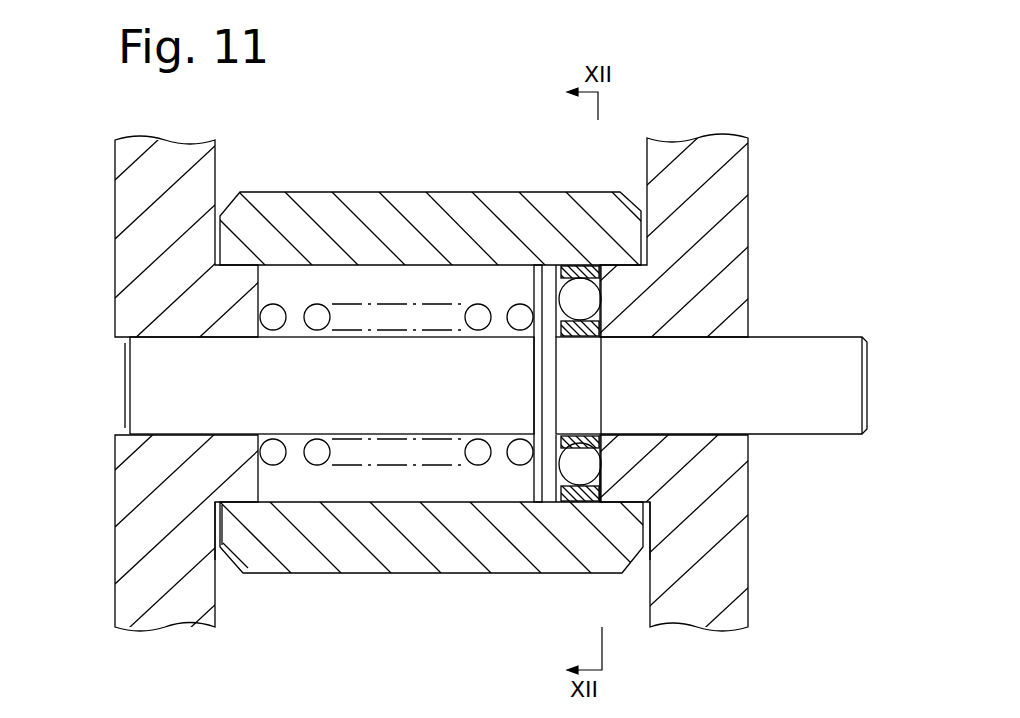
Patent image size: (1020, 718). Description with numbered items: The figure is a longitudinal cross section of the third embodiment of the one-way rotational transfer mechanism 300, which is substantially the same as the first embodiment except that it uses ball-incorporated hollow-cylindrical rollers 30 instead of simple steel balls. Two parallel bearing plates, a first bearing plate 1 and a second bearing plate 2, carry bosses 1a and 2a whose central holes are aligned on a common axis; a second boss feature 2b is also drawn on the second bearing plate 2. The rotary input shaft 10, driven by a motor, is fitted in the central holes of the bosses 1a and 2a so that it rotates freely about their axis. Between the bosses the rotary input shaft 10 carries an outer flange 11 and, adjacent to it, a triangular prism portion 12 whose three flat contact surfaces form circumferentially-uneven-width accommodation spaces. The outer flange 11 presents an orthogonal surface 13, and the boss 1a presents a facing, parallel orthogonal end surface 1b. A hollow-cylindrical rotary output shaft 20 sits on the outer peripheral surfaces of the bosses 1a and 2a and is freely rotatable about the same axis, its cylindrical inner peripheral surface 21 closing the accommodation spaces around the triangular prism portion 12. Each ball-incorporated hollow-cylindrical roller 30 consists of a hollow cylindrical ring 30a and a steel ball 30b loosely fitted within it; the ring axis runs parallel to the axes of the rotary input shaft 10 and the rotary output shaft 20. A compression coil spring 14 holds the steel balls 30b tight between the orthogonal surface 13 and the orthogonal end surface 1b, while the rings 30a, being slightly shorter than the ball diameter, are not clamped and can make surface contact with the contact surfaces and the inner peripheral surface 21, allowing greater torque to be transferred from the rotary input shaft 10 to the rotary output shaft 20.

The first bearing plate 1 is at (745, 208).
The boss 1a is at (625, 488).
The orthogonal end surface 1b is at (599, 476).
The second bearing plate 2 is at (120, 195).
The boss 2a is at (237, 493).
The cover step portion 2b is at (277, 475).
The rotary input shaft 10 is at (782, 326).
The outer flange 11 is at (524, 288).
The triangular prism portion 12 is at (700, 515).
The orthogonal surface 13 is at (565, 375).
The compression coil spring 14 is at (317, 304).
The hollow-cylindrical rotary output shaft 20 is at (396, 188).
The inner peripheral surface 21 is at (393, 500).
The ball-incorporated hollow-cylindrical roller 30 is at (540, 359).
The hollow cylindrical ring 30a is at (568, 268).
The steel ball 30b is at (605, 280).
The one-way rotational transfer mechanism 300 is at (779, 130).